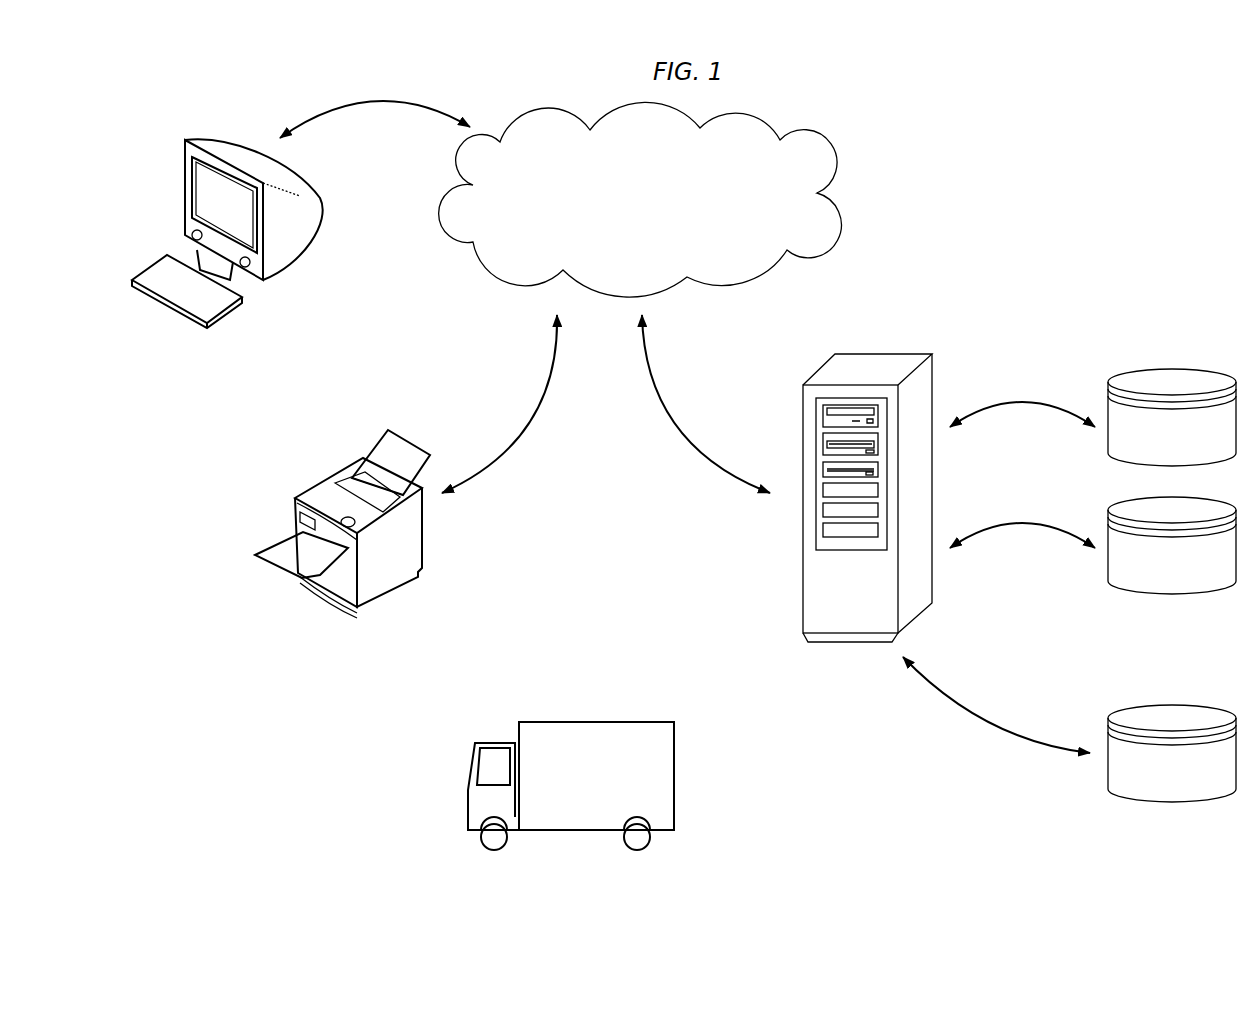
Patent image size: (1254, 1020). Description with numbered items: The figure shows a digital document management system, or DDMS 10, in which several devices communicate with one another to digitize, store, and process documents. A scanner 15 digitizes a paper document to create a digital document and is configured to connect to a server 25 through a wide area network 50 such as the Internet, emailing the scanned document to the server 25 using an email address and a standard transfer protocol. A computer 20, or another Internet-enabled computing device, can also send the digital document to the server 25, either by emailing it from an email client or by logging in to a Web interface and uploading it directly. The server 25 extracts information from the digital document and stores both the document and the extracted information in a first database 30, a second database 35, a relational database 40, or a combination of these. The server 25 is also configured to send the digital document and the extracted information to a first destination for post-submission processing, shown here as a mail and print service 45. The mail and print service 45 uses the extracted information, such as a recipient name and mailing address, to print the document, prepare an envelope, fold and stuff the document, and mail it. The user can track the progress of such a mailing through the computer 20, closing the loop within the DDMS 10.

The digital document management system 10 is at (884, 108).
The scanner 15 is at (328, 475).
The computer 20 is at (202, 137).
The server 25 is at (866, 372).
The first database 30 is at (1172, 368).
The second database 35 is at (1172, 595).
The relational database 40 is at (1172, 802).
The mail and print service 45 is at (596, 722).
The wide area network 50 is at (827, 197).